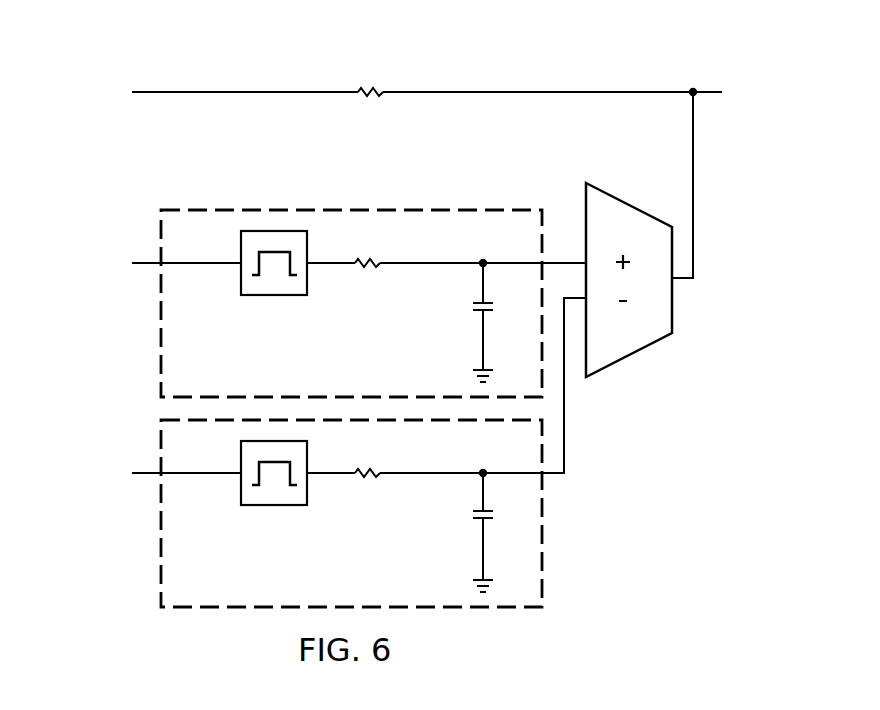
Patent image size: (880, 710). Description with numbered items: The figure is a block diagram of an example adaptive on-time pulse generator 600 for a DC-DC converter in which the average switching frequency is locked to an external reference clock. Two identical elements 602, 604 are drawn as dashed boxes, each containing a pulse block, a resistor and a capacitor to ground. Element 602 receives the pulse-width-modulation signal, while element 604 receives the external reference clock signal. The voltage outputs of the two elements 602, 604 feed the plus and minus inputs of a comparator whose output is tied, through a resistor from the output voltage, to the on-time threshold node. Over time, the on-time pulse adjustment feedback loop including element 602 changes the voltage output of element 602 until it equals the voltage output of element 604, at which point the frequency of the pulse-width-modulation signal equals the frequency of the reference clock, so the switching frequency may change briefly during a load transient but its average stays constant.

The adaptive on-time pulse generator 600 is at (562, 68).
The element receiving the PWM signal 602 is at (214, 200).
The element receiving the reference clock signal 604 is at (214, 617).